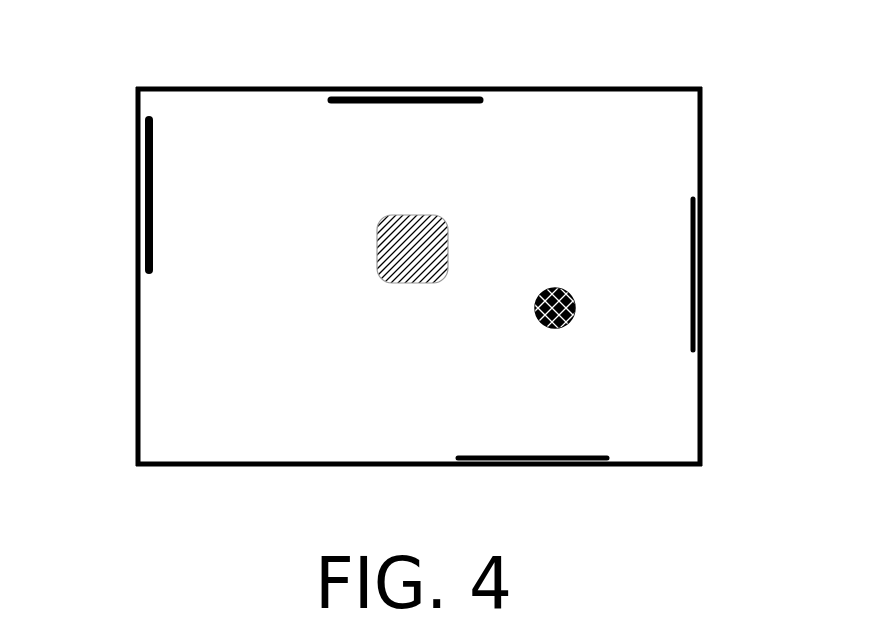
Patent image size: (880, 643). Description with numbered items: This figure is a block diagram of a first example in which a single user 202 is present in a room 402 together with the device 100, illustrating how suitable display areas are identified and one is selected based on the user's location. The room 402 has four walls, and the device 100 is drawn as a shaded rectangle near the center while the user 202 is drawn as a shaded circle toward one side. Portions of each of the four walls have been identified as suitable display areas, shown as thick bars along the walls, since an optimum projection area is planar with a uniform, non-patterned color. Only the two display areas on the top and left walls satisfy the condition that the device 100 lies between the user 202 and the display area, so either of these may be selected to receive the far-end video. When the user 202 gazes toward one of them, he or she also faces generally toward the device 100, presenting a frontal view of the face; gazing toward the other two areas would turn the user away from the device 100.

The room 402 is at (421, 282).
The device 100 is at (418, 279).
The user 202 is at (577, 293).